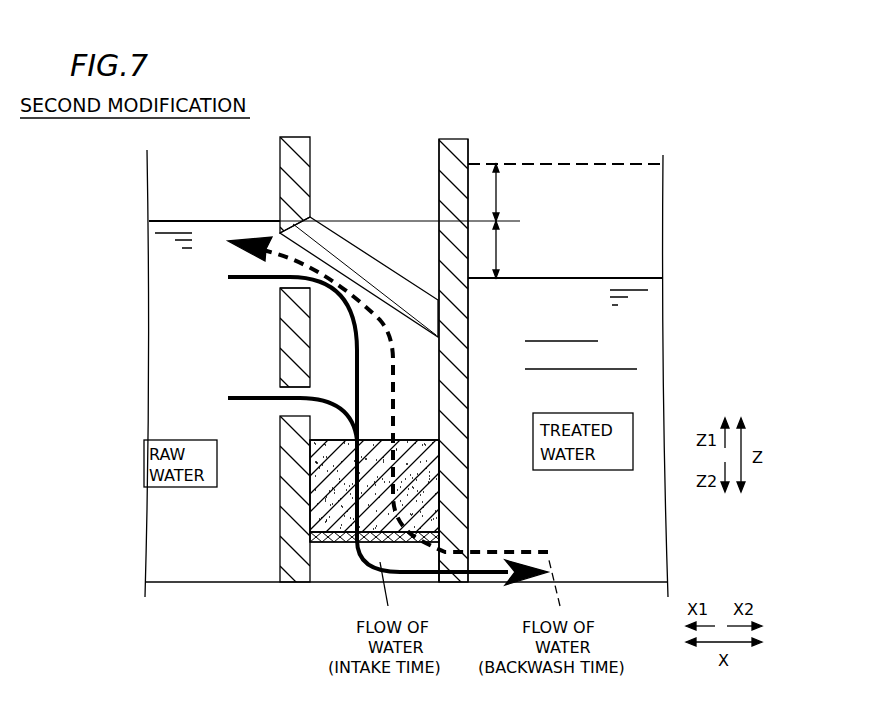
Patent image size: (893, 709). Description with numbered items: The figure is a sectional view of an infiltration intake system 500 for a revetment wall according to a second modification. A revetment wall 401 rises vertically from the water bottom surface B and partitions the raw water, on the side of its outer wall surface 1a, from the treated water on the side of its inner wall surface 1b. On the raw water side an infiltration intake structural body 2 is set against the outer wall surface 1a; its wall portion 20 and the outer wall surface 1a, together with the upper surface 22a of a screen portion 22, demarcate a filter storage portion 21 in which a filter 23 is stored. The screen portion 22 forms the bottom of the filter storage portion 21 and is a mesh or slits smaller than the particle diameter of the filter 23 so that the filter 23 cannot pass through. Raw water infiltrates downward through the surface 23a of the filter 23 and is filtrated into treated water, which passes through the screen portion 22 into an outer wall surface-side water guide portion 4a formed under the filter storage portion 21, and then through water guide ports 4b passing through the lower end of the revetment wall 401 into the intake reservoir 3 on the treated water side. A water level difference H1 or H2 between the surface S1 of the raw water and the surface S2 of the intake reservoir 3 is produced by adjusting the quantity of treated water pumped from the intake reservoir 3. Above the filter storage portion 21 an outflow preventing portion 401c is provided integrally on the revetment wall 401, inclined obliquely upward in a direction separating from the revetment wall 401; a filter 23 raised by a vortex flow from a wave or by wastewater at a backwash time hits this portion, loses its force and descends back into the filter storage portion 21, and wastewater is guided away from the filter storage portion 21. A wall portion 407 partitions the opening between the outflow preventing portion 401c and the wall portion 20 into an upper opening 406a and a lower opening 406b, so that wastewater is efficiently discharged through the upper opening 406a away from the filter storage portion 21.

The infiltration intake system 500 is at (325, 156).
The revetment wall 401 is at (454, 152).
The outflow preventing portion 401c is at (368, 262).
The outer wall surface 1a is at (440, 157).
The inner wall surface 1b is at (468, 155).
The water surface of the raw water S1 is at (242, 220).
The water surface of the intake reservoir S2 is at (572, 160).
The water level difference H1 is at (508, 249).
The water level difference H2 is at (508, 192).
The intake reservoir 3 is at (628, 268).
The upper opening 406a is at (285, 289).
The wall portion 407 is at (296, 330).
The lower opening 406b is at (292, 386).
The filter storage portion 21 is at (349, 424).
The infiltration intake structural body 2 is at (230, 451).
The surface of the filter 23a is at (400, 437).
The filter 23 is at (320, 476).
The wall portion 20 is at (290, 508).
The upper surface of the screen portion 22a is at (428, 530).
The screen portion 22 is at (320, 536).
The water bottom surface B is at (155, 578).
The outer wall surface-side water guide portion 4a is at (317, 575).
The water guide ports 4b is at (465, 560).